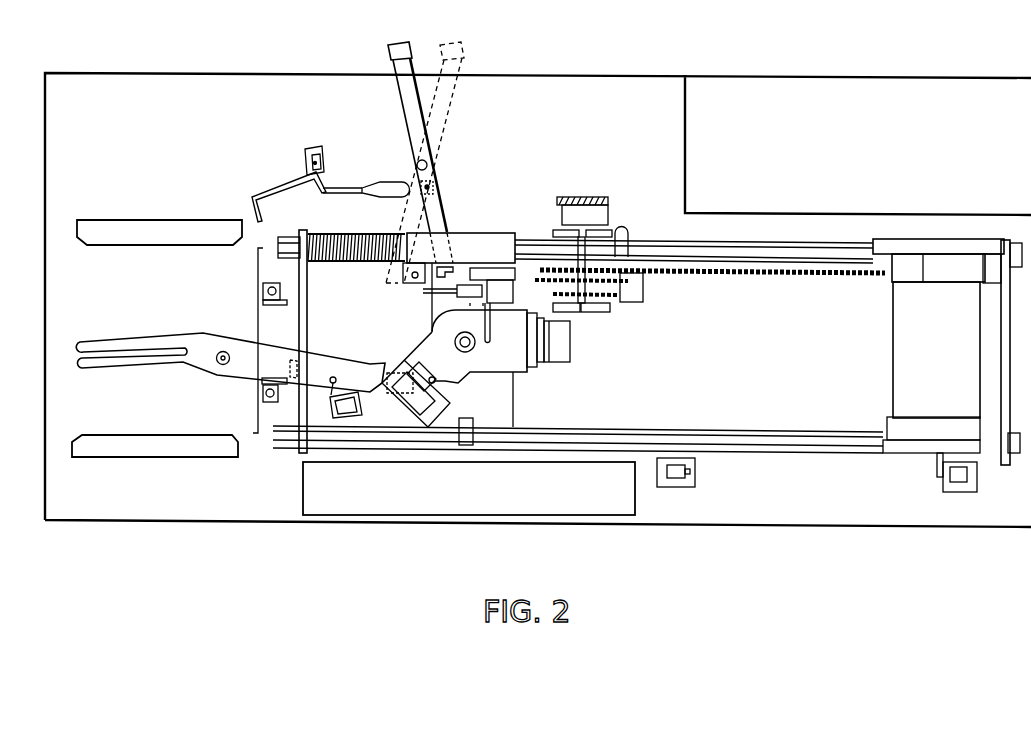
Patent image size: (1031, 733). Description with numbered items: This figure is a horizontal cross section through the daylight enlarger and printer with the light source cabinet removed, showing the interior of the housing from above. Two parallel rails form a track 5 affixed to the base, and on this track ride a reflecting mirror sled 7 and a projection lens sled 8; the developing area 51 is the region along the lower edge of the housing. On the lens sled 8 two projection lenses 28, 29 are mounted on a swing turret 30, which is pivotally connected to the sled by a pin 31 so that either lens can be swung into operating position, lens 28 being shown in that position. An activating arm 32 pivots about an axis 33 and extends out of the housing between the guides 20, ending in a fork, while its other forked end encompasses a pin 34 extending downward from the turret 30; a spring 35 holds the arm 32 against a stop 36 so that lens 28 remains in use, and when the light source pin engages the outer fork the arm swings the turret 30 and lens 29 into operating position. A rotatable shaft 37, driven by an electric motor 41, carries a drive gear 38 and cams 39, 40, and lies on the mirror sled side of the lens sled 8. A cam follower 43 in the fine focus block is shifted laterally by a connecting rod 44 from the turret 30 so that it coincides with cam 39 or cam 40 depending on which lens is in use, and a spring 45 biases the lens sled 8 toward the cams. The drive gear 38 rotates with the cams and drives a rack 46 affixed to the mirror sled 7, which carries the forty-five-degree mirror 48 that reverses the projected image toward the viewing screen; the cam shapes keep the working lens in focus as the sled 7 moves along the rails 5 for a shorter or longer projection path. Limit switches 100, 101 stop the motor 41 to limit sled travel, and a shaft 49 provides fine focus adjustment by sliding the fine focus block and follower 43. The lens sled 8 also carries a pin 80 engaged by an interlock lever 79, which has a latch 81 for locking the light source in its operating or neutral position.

The track 5 is at (775, 252).
The reflecting mirror sled 7 is at (952, 262).
The projection lens sled 8 is at (495, 243).
The guides 20 is at (172, 226).
The projection lens 28 is at (560, 350).
The projection lens 29 is at (430, 397).
The swing turret 30 is at (463, 367).
The pin 31 is at (471, 348).
The activating arm 32 is at (276, 360).
The axis 33 is at (224, 365).
The pin 34 is at (432, 377).
The spring 35 is at (342, 378).
The stop 36 is at (357, 401).
The rotatable shaft 37 is at (580, 252).
The drive gear 38 is at (604, 268).
The cam 39 is at (604, 282).
The cam 40 is at (621, 302).
The electric motor 41 is at (591, 210).
The cam follower 43 is at (518, 283).
The connecting rod 44 is at (490, 341).
The spring 45 is at (361, 231).
The rack 46 is at (818, 276).
The mirror 48 is at (910, 317).
The shaft 49 is at (432, 308).
The developing area 51 is at (597, 505).
The interlock lever 79 is at (412, 127).
The pin 80 is at (412, 279).
The latch 81 is at (285, 186).
The limit switch 100 is at (960, 480).
The limit switch 101 is at (673, 473).